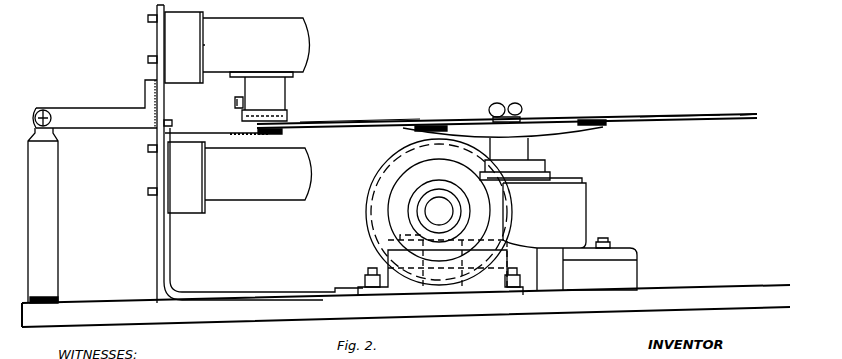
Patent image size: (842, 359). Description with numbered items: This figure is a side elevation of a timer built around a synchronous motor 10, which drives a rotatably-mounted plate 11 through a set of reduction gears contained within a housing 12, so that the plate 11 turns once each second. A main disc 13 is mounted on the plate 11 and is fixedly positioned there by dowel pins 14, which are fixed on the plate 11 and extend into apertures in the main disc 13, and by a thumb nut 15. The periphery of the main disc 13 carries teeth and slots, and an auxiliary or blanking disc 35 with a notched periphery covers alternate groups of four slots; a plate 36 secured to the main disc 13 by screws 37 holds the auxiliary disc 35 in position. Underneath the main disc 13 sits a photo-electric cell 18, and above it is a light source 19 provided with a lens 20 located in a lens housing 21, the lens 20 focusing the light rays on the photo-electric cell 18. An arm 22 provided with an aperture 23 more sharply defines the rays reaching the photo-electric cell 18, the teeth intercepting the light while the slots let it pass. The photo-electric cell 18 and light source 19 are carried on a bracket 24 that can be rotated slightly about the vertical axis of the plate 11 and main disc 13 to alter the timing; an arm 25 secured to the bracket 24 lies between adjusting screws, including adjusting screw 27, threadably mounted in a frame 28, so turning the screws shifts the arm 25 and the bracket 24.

The synchronous motor 10 is at (369, 173).
The plate 11 is at (566, 129).
The housing 12 is at (588, 190).
The main disc 13 is at (710, 121).
The dowel pins 14 is at (592, 117).
The thumb nut 15 is at (499, 103).
The photo-electric cell 18 is at (283, 201).
The light source 19 is at (299, 6).
The lens 20 is at (290, 117).
The lens housing 21 is at (288, 92).
The arm 22 is at (197, 133).
The aperture 23 is at (284, 134).
The bracket 24 is at (170, 244).
The arm 25 is at (92, 107).
The adjusting screw 27 is at (45, 108).
The frame 28 is at (50, 208).
The auxiliary or blanking disc 35 is at (746, 111).
The plate 36 is at (714, 102).
The screws 37 is at (343, 122).